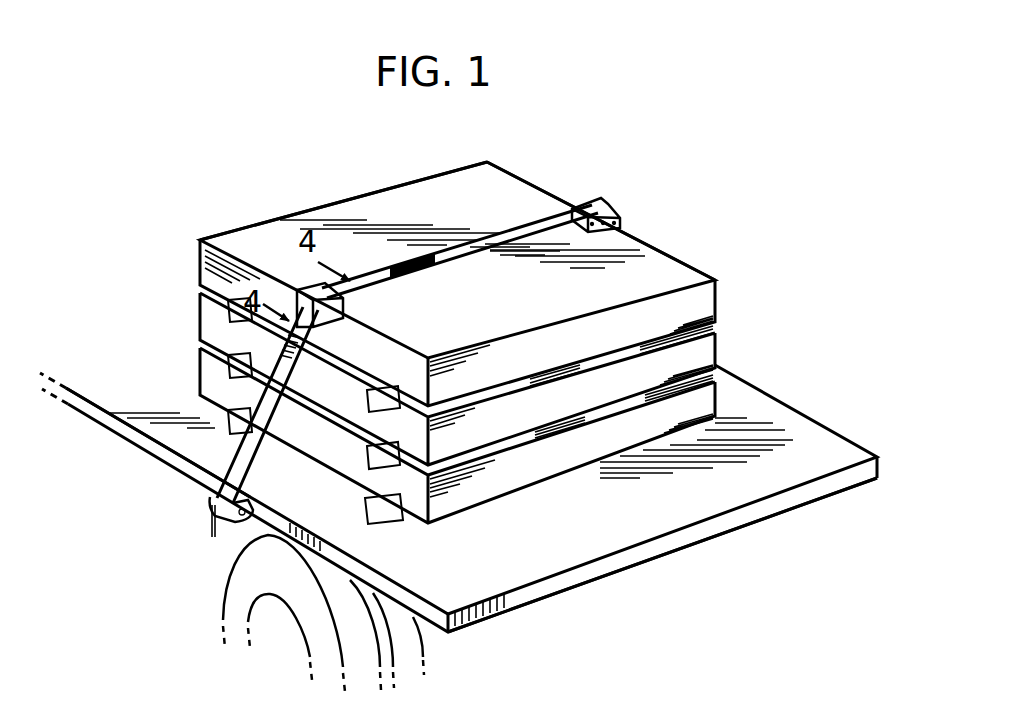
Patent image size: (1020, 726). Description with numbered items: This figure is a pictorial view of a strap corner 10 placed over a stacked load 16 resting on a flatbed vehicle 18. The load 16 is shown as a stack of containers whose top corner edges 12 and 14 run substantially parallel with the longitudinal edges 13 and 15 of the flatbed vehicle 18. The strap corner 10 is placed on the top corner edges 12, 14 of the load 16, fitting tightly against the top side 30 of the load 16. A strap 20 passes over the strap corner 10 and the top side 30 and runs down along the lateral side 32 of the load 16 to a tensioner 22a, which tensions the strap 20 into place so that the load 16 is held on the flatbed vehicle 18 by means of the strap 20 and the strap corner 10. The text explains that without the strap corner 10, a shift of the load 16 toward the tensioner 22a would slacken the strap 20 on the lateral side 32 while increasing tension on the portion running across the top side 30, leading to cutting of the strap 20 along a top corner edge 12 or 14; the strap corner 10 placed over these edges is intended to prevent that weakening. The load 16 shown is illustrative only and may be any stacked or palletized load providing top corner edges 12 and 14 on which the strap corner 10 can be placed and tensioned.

The strap corner 10 is at (296, 282).
The top corner edge 12 is at (223, 253).
The longitudinal edge 13 is at (148, 442).
The top corner edge 14 is at (660, 253).
The longitudinal edge 15 is at (768, 393).
The stacked load 16 is at (515, 166).
The flatbed vehicle 18 is at (582, 594).
The strap 20 is at (505, 233).
The tensioner 22a is at (208, 503).
The top side 30 is at (375, 195).
The lateral side 32 is at (210, 325).